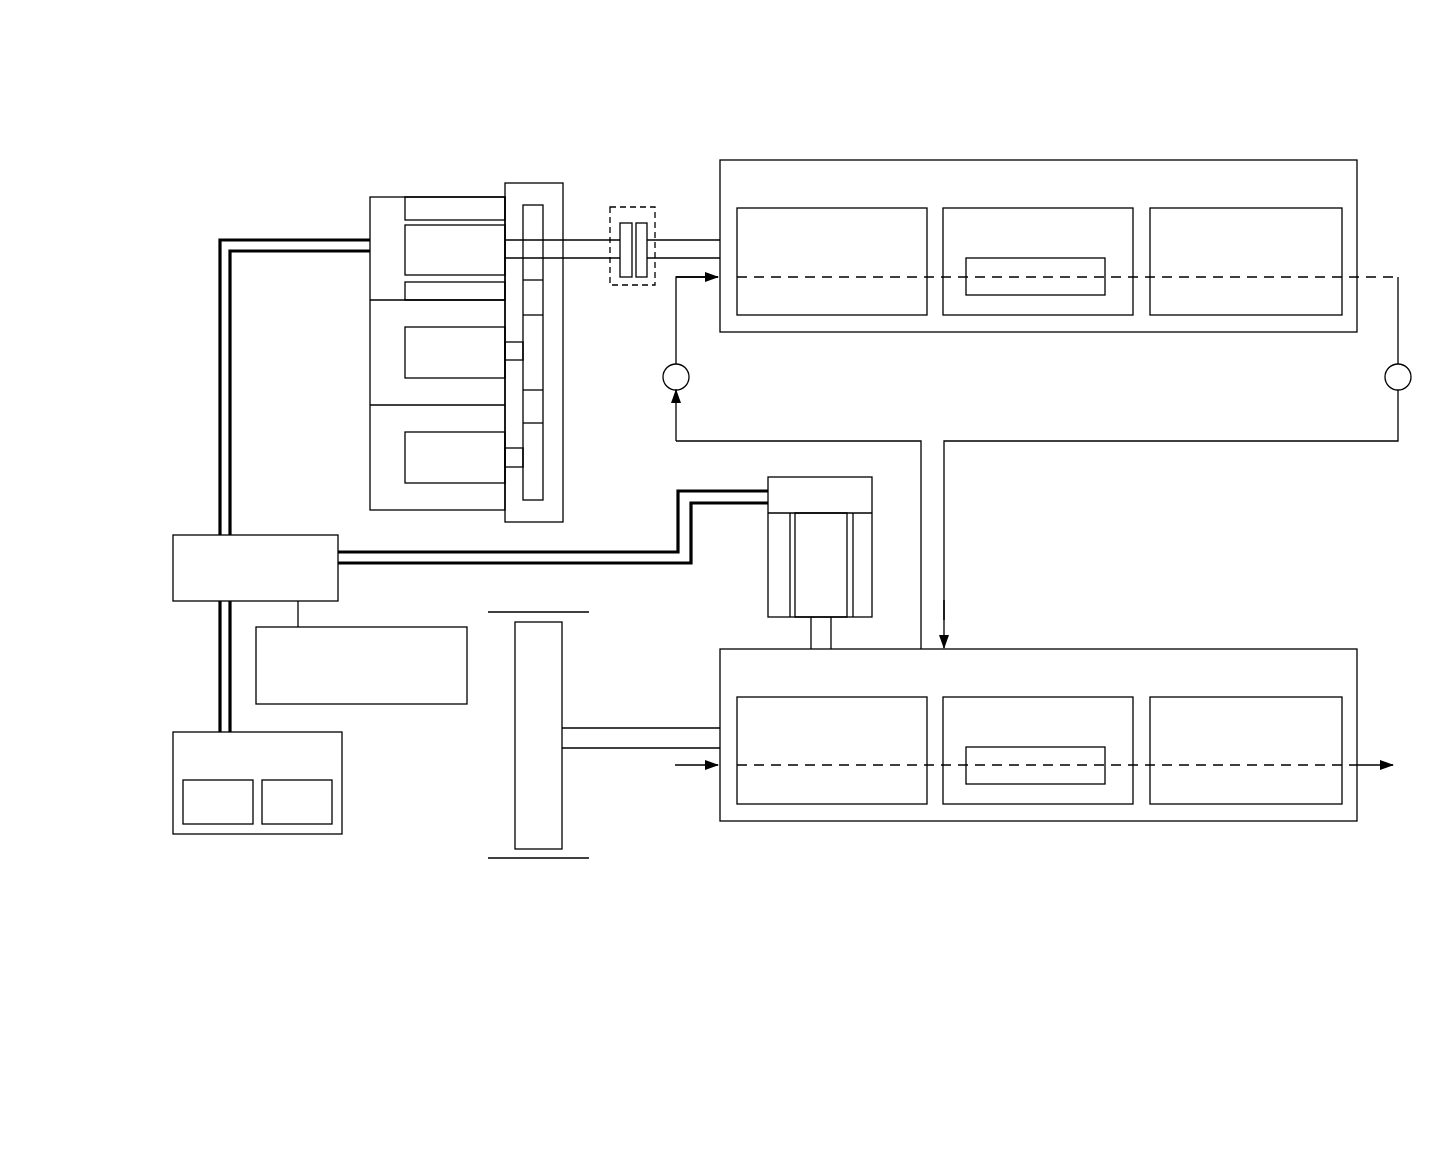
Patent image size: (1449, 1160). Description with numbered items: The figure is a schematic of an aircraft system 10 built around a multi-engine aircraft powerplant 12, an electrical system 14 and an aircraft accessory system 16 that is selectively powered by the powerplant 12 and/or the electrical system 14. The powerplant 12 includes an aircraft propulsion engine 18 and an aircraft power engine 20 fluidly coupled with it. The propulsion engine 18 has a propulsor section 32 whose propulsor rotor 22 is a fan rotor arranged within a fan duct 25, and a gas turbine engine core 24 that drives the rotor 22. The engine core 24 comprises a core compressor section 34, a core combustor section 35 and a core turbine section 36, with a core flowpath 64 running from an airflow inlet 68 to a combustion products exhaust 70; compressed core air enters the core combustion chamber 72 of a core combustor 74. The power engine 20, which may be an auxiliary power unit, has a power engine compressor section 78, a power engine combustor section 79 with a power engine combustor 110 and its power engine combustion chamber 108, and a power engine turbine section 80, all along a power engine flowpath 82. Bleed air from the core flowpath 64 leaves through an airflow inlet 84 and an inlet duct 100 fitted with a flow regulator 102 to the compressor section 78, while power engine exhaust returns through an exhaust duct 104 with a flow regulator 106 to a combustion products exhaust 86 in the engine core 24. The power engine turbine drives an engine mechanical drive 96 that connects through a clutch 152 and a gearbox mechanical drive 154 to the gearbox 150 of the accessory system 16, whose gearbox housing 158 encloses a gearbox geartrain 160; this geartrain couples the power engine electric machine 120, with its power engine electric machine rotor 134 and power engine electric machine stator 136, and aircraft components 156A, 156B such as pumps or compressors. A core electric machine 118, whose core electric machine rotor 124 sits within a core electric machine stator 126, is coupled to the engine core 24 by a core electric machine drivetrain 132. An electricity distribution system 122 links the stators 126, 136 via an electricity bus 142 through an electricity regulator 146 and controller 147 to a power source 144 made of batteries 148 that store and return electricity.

The aircraft system 10 is at (208, 104).
The aircraft powerplant 12 is at (1342, 104).
The electrical system 14 is at (212, 888).
The aircraft accessory system 16 is at (526, 124).
The aircraft propulsion engine 18 is at (1327, 626).
The aircraft power engine 20 is at (1360, 147).
The propulsor rotor 22 is at (515, 812).
The gas turbine engine core 24 is at (1359, 673).
The fan duct 25 is at (575, 860).
The propulsor section 32 is at (532, 874).
The core compressor section 34 is at (800, 806).
The core combustor section 35 is at (1038, 806).
The core turbine section 36 is at (1228, 806).
The core flowpath 64 is at (868, 768).
The airflow inlet 68 is at (676, 768).
The combustion products exhaust 70 is at (1395, 768).
The core combustion chamber 72 is at (1072, 786).
The core combustor 74 is at (1002, 786).
The power engine compressor section 78 is at (806, 316).
The power engine combustor section 79 is at (970, 316).
The power engine turbine section 80 is at (1180, 316).
The power engine flowpath 82 is at (842, 279).
The airflow inlet 84 is at (919, 648).
The combustion products exhaust 86 is at (952, 646).
The engine mechanical drive 96 is at (690, 238).
The inlet duct 100 is at (835, 440).
The flow regulator 102 is at (690, 382).
The exhaust duct 104 is at (1050, 440).
The flow regulator 106 is at (1385, 382).
The power engine combustion chamber 108 is at (1072, 282).
The power engine combustor 110 is at (1036, 296).
The core electric machine 118 is at (748, 576).
The power engine electric machine 120 is at (422, 168).
The electricity distribution system 122 is at (212, 212).
The core electric machine rotor 124 is at (802, 584).
The core electric machine stator 126 is at (778, 565).
The core electric machine drivetrain 132 is at (808, 641).
The power engine electric machine rotor 134 is at (474, 264).
The power engine electric machine stator 136 is at (462, 198).
The electricity bus 142 is at (200, 434).
The power source 144 is at (342, 775).
The electricity regulator 146 is at (236, 597).
The controller 147 is at (395, 705).
The battery 148 is at (200, 816).
The gearbox 150 is at (549, 164).
The clutch 152 is at (632, 206).
The gearbox mechanical drive 154 is at (583, 262).
The aircraft component 156A is at (370, 362).
The aircraft component 156B is at (370, 462).
The gearbox housing 158 is at (565, 464).
The gearbox geartrain 160 is at (560, 512).